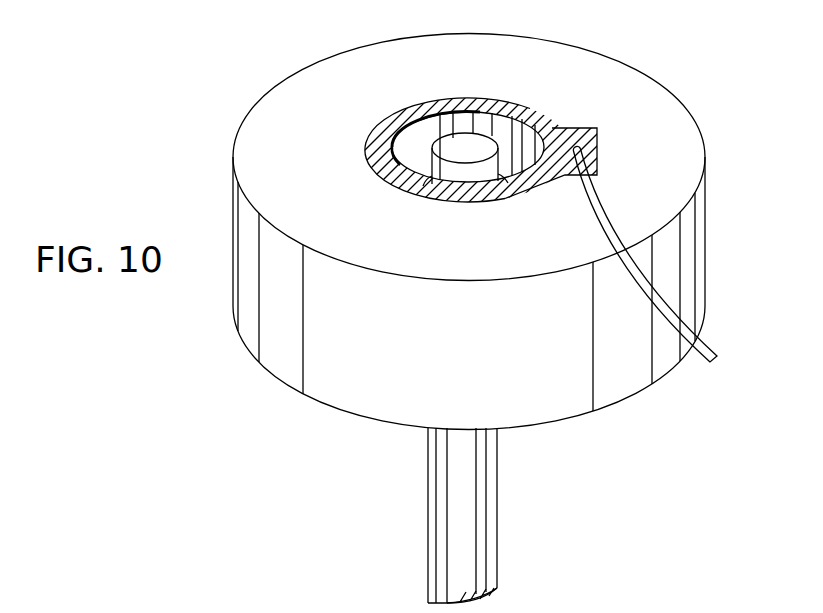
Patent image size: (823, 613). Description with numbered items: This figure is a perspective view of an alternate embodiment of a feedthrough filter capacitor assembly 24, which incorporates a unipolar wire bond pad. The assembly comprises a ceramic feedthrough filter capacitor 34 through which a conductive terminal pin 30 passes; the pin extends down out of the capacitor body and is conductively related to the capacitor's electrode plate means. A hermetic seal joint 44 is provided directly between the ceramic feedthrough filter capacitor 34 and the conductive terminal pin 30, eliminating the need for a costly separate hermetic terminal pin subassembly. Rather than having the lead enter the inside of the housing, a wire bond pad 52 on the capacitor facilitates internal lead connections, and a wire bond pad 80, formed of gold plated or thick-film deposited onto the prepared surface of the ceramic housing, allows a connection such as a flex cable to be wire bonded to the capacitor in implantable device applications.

The feedthrough filter capacitor assembly 24 is at (730, 132).
The conductive terminal pin 30 is at (497, 556).
The ceramic feedthrough filter capacitor 34 is at (289, 395).
The hermetic seal joint 44 is at (514, 146).
The wire bond pad 52 is at (594, 127).
The wire bond pad 80 is at (672, 302).